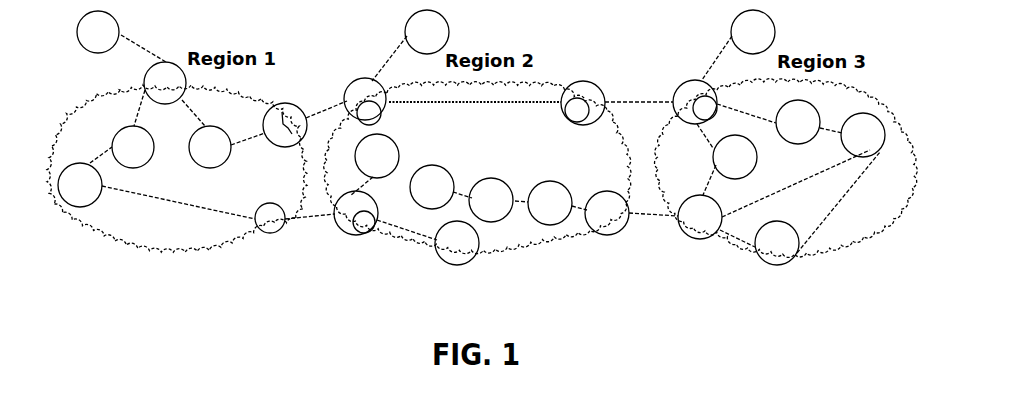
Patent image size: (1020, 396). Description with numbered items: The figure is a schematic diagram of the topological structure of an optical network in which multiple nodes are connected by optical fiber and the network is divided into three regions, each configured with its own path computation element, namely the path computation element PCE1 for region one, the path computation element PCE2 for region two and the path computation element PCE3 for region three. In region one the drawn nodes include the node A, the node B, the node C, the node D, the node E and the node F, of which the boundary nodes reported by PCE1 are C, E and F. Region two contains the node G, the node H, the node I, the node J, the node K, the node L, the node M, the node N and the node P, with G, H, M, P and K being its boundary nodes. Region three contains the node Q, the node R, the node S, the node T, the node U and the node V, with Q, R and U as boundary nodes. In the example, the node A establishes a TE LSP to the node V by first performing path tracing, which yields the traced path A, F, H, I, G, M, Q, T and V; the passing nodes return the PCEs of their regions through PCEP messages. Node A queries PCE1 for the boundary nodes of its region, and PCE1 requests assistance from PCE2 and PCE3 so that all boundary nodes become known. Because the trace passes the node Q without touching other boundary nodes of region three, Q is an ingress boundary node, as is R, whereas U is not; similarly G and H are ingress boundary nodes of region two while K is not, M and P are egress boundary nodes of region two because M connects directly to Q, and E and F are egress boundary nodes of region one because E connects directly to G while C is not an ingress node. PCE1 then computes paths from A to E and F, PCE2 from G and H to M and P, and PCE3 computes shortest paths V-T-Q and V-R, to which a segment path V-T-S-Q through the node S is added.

The path computation element PCE1 is at (139, 32).
The path computation element PCE2 is at (453, 32).
The path computation element PCE3 is at (786, 32).
The node A is at (91, 192).
The network node B is at (123, 142).
The boundary node C is at (157, 79).
The network node D is at (210, 161).
The boundary node E is at (285, 110).
The boundary node F is at (270, 237).
The boundary node G is at (365, 88).
The boundary node H is at (356, 231).
The node I is at (368, 156).
The network node J is at (432, 175).
The boundary node K is at (457, 255).
The network node L is at (491, 184).
The boundary node M is at (577, 93).
The network node N is at (550, 215).
The boundary node P is at (608, 231).
The boundary node Q is at (680, 101).
The boundary node R is at (700, 234).
The node S is at (722, 157).
The node T is at (798, 135).
The boundary node U is at (777, 256).
The node V is at (866, 146).